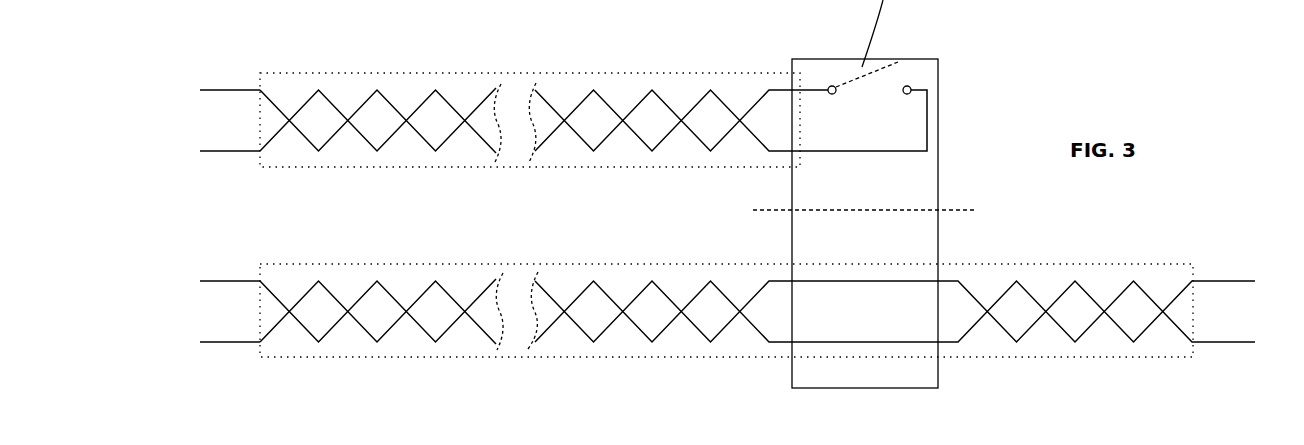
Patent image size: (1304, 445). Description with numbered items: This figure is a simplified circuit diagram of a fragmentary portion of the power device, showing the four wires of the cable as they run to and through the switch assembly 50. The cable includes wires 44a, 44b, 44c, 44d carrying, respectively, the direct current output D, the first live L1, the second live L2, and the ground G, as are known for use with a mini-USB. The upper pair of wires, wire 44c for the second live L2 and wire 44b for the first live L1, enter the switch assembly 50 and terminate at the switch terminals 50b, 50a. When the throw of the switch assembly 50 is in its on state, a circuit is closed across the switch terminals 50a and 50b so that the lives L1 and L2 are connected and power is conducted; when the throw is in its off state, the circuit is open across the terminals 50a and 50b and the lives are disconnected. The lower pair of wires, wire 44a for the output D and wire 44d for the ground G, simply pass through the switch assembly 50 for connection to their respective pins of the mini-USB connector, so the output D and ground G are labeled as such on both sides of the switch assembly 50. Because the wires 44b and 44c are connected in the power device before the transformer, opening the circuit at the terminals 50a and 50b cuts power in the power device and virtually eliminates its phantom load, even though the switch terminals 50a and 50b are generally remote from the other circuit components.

The wire for direct current output 44a is at (226, 281).
The wire for first live 44b is at (238, 153).
The wire for second live 44c is at (228, 90).
The wire for ground 44d is at (237, 345).
The switch assembly 50 is at (960, 79).
The switch terminal 50a is at (907, 84).
The switch terminal 50b is at (830, 84).
The first live L1 is at (197, 159).
The second live L2 is at (200, 85).
The direct current output D is at (201, 289).
The ground G is at (201, 351).